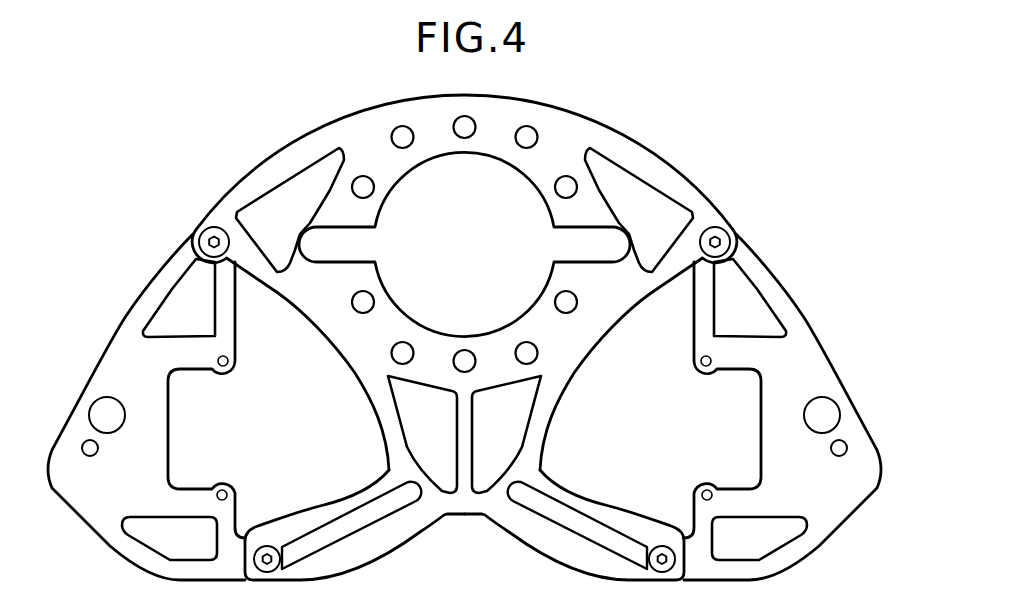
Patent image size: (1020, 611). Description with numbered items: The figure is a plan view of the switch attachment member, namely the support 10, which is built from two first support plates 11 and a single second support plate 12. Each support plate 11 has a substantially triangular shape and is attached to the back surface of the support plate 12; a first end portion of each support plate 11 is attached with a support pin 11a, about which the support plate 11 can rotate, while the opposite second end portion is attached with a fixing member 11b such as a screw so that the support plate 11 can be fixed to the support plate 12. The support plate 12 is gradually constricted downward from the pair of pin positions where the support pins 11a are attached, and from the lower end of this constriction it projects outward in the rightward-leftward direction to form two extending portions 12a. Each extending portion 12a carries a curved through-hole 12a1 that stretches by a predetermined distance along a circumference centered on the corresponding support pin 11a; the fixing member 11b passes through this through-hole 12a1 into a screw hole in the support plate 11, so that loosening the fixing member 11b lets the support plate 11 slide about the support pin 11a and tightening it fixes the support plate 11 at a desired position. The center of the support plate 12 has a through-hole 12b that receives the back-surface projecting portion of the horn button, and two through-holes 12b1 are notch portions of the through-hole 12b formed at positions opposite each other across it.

The support 10 is at (148, 143).
The support plate 11 is at (93, 516).
The support pin 11a is at (208, 236).
The fixing member 11b is at (264, 546).
The support plate 12 is at (461, 516).
The extending portion 12a is at (392, 543).
The through-hole 12a1 is at (343, 520).
The through-hole 12b is at (527, 174).
The through-hole 12b1 is at (343, 225).